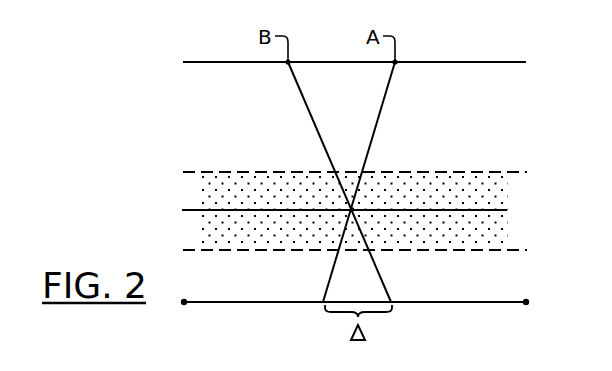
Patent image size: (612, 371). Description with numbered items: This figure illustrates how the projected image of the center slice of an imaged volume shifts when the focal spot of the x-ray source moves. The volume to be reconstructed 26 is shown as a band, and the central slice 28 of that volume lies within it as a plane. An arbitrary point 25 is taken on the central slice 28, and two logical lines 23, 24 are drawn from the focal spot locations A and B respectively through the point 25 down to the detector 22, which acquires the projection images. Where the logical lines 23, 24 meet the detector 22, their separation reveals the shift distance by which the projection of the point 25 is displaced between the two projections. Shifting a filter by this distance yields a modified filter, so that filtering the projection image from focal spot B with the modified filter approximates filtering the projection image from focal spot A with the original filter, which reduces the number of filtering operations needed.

The detector 22 is at (440, 302).
The logical line 23 is at (383, 102).
The logical line 24 is at (306, 107).
The arbitrary point 25 is at (355, 209).
The volume to be reconstructed 26 is at (450, 172).
The central slice 28 is at (182, 210).